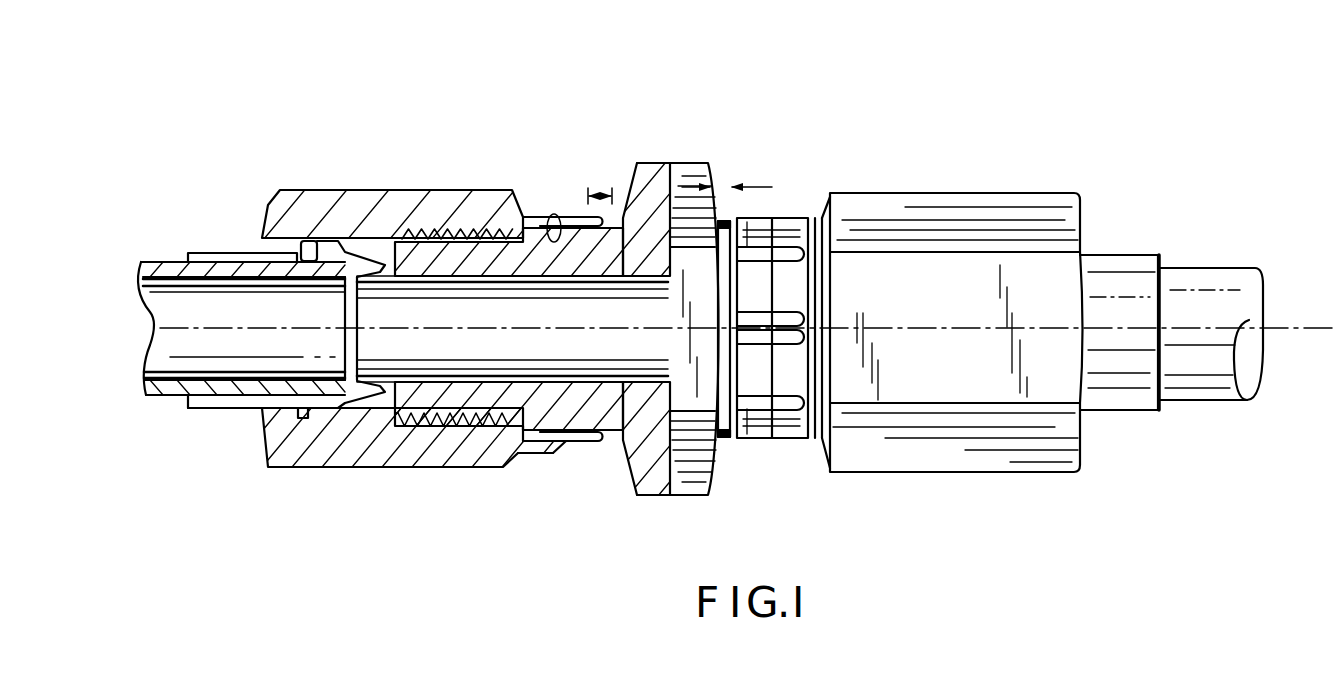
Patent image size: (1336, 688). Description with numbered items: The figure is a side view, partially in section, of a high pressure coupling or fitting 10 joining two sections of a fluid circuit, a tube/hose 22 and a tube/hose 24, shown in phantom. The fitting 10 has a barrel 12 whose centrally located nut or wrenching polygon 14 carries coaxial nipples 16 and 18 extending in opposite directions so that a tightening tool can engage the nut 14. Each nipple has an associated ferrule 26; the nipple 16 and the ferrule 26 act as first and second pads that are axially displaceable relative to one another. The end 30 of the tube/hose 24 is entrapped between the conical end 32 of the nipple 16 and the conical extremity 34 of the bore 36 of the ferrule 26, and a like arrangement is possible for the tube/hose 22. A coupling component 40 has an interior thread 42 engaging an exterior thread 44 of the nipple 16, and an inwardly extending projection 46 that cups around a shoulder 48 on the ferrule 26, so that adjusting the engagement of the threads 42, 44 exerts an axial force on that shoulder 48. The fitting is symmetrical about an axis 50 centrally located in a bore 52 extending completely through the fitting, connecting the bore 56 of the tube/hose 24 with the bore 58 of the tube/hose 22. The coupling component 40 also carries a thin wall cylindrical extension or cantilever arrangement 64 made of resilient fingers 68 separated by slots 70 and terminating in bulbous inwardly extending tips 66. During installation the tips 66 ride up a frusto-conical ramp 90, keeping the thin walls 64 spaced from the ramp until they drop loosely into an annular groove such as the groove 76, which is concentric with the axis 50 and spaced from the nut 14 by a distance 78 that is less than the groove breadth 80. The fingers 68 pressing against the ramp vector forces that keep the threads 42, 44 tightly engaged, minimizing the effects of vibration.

The fitting 10 is at (712, 160).
The barrel 12 is at (613, 460).
The nut or wrenching polygon 14 is at (604, 278).
The nipple 16 is at (553, 410).
The nipple 18 is at (727, 440).
The tube/hose 22 is at (1198, 267).
The tube/hose 24 is at (170, 260).
The ferrule 26 is at (350, 247).
The end of the tube/hose section 30 is at (347, 412).
The conical end of the nipple 32 is at (380, 403).
The conical extremity of the bore 34 is at (360, 284).
The bore of the ferrule 36 is at (218, 392).
The coupling component 40 is at (433, 467).
The interior thread 42 is at (410, 426).
The exterior thread 44 is at (463, 418).
The inwardly extending projection 46 is at (265, 237).
The shoulder 48 is at (318, 263).
The axis 50 is at (963, 330).
The bore 52 is at (462, 315).
The bore of tube/hose 56 is at (167, 310).
The bore of tube/hose 58 is at (1252, 358).
The thin wall cylindrical extension or cantilever arrangement 64 is at (553, 453).
The bulbous inwardly extending tip 66 is at (600, 437).
The fingers 68 is at (757, 443).
The slots 70 is at (757, 385).
The annular groove 76 is at (750, 240).
The distance 78 is at (724, 215).
The breadth of the annular groove 80 is at (598, 186).
The ramp 90 is at (552, 214).